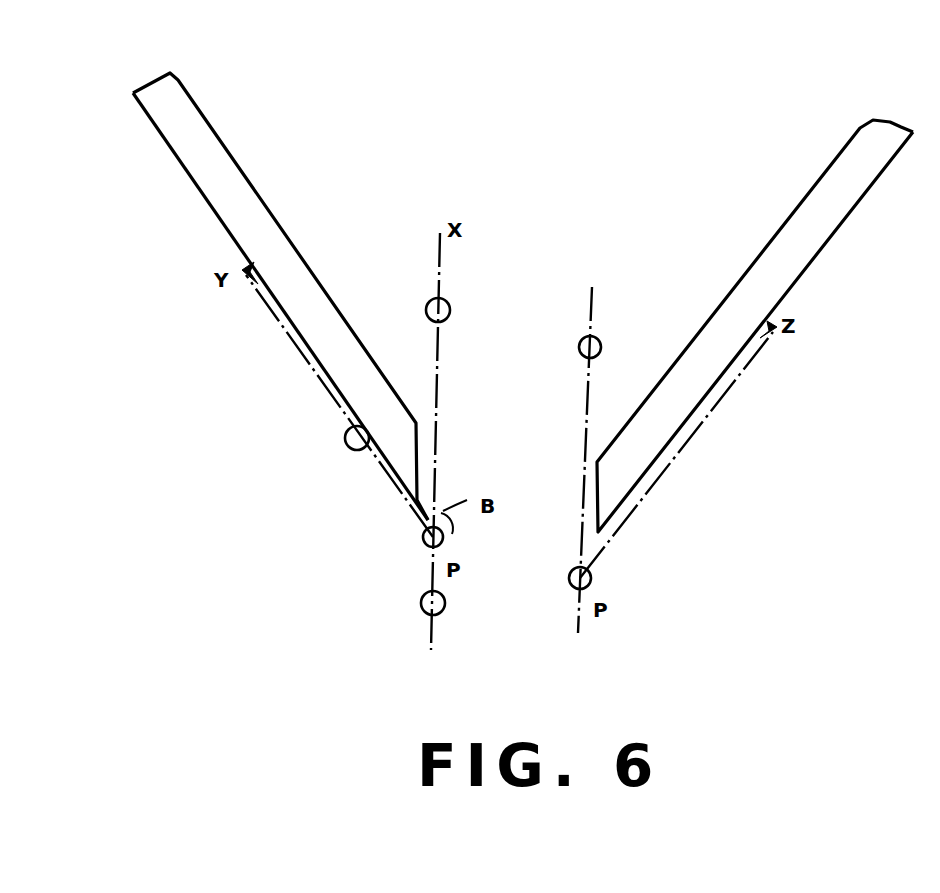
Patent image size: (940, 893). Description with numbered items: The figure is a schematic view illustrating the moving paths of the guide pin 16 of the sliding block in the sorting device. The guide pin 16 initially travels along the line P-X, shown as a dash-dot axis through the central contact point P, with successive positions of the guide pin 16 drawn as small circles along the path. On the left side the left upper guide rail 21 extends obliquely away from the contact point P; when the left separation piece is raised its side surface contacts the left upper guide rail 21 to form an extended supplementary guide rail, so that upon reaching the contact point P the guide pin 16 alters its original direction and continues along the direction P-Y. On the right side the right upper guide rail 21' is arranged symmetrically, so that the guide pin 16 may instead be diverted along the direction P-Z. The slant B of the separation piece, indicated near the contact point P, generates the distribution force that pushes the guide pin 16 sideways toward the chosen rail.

The left upper guide rail 21 is at (280, 274).
The right upper guide rail 21' is at (755, 304).
The guide pin 16 is at (421, 541).